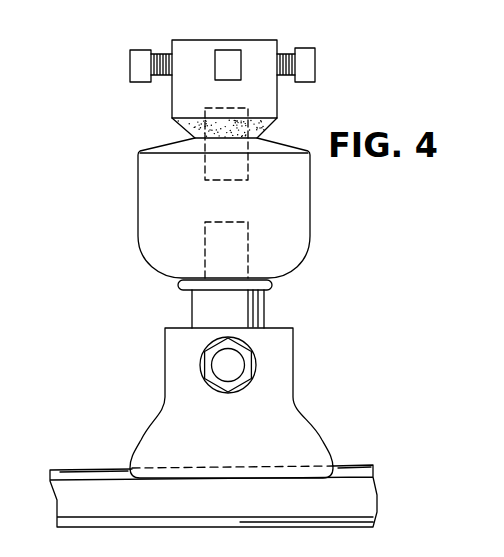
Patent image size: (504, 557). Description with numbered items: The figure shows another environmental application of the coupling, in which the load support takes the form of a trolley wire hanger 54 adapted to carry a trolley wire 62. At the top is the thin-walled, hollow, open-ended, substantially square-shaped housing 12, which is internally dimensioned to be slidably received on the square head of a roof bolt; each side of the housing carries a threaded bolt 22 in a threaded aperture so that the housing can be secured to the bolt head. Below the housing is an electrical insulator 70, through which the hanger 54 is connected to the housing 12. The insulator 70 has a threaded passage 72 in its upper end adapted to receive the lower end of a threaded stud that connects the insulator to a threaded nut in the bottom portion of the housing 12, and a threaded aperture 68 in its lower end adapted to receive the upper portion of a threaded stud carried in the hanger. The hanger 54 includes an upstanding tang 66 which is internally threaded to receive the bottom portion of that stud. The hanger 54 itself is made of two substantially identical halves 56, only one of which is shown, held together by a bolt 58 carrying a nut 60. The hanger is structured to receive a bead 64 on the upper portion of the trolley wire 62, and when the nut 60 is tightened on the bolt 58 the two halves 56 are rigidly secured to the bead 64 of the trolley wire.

The housing 12 is at (226, 30).
The threaded bolt 22 is at (306, 50).
The trolley wire hanger 54 is at (178, 304).
The halves 56 is at (202, 413).
The bolt 58 is at (227, 367).
The nut 60 is at (252, 356).
The trolley wire 62 is at (270, 493).
The bead 64 is at (358, 470).
The upstanding tang 66 is at (240, 307).
The threaded aperture 68 is at (233, 256).
The electrical insulator 70 is at (287, 199).
The threaded passage 72 is at (228, 162).